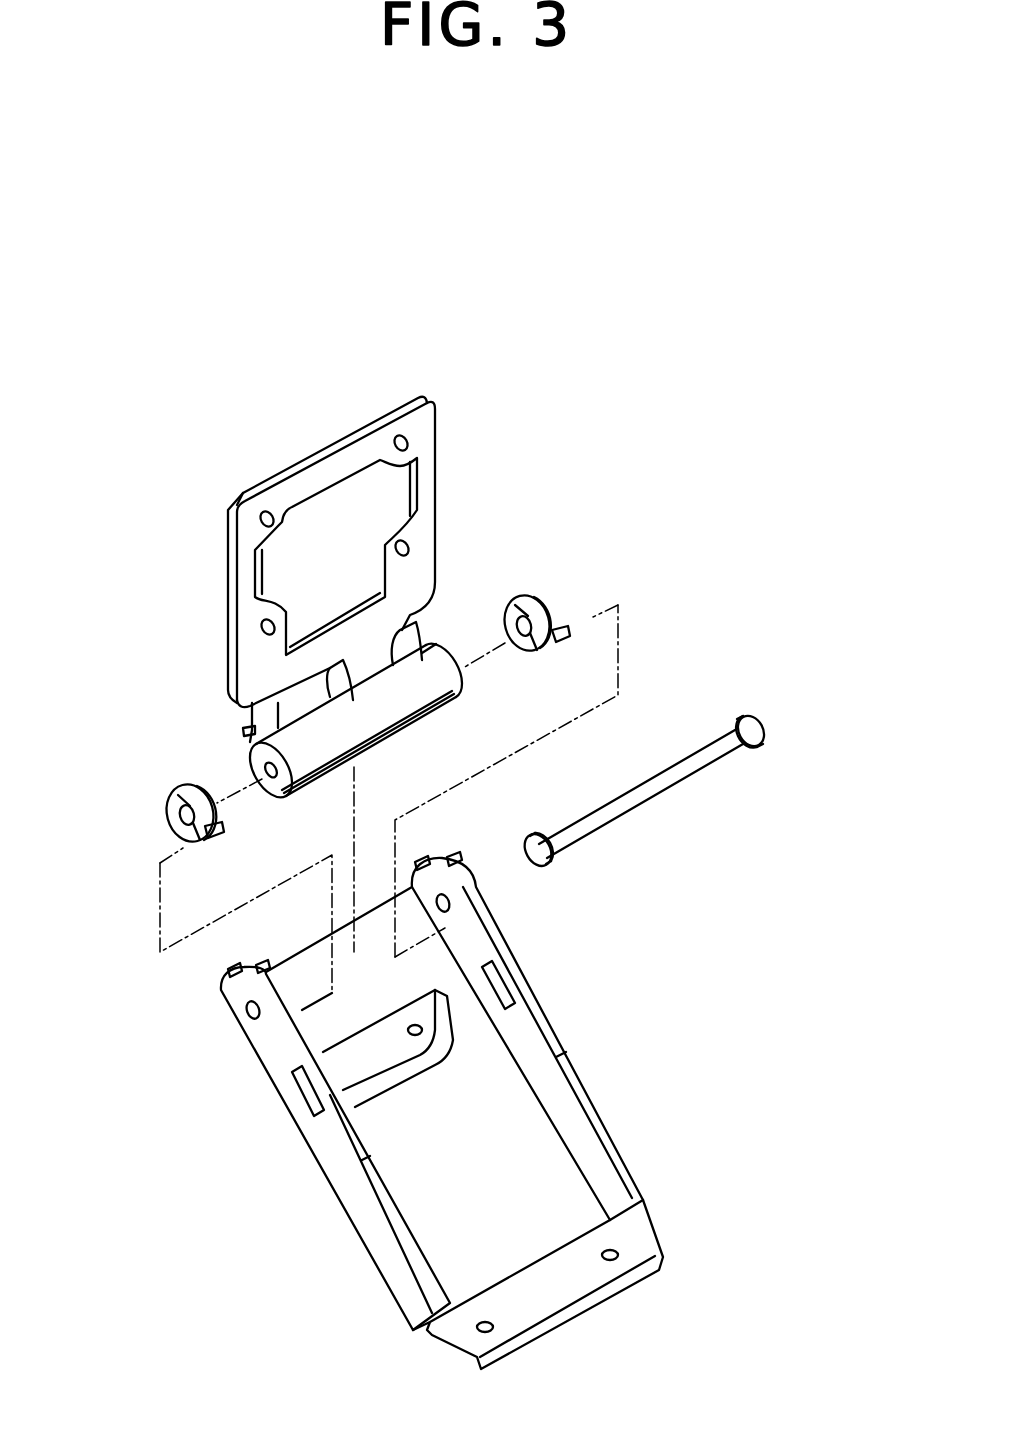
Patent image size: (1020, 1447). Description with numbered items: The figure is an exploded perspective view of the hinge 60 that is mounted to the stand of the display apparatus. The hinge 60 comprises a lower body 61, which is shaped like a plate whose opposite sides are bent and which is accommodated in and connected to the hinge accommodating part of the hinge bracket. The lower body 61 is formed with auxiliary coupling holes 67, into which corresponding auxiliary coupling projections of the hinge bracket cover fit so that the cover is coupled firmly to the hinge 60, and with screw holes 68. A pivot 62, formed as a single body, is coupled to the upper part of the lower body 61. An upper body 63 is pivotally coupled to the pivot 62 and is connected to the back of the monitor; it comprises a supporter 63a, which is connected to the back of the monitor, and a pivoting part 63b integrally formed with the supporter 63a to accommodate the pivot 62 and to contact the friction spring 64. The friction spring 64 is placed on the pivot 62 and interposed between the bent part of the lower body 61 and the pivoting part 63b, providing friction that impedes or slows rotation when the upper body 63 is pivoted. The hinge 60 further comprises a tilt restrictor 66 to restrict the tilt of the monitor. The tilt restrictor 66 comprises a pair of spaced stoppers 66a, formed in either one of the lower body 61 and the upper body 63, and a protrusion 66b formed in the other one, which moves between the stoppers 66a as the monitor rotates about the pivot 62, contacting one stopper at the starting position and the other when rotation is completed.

The hinge 60 is at (682, 547).
The lower body 61 is at (305, 1165).
The pivot 62 is at (746, 709).
The upper body 63 is at (96, 578).
The supporter 63a is at (229, 586).
The pivoting part 63b is at (247, 757).
The friction spring 64 is at (543, 598).
The tilt restrictor 66 is at (110, 750).
The stoppers 66a is at (263, 966).
The protrusion 66b is at (243, 747).
The auxiliary coupling holes 67 is at (502, 982).
The screw holes 68 is at (424, 1030).